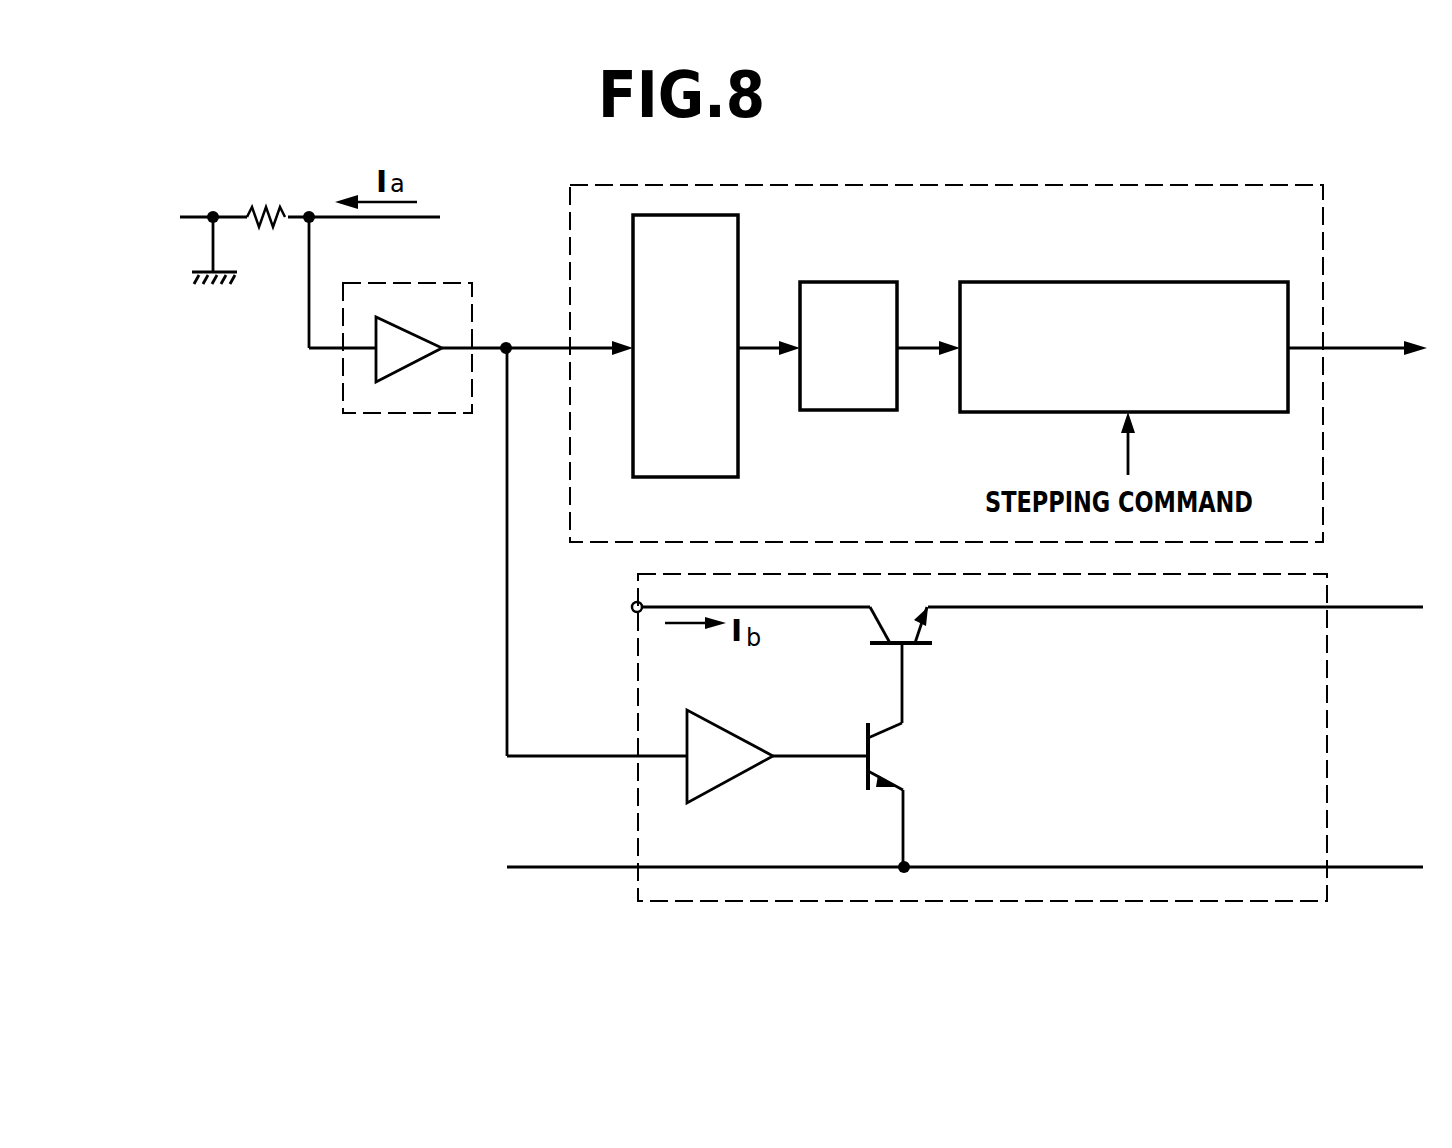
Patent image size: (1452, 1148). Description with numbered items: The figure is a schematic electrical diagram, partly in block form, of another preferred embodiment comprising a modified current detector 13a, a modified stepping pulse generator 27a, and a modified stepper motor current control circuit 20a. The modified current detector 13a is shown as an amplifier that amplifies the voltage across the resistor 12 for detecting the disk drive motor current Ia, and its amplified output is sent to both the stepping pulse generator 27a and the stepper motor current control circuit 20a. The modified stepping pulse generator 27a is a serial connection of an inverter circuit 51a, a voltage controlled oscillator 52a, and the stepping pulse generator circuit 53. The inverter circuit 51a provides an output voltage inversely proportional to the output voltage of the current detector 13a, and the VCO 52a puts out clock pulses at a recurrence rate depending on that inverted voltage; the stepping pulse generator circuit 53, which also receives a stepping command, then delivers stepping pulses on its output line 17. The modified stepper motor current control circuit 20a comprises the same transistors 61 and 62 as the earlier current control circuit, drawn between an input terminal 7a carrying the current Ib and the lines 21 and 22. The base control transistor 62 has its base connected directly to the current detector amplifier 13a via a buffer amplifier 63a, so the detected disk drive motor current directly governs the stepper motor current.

The resistor 12 is at (259, 206).
The modified current detector 13a is at (387, 282).
The modified stepping pulse generator 27a is at (1323, 268).
The inverter circuit 51a is at (738, 268).
The voltage controlled oscillator 52a is at (863, 282).
The stepping pulse generator circuit 53 is at (1103, 280).
The output line 17 is at (1370, 343).
The modified stepper motor current control circuit 20a is at (1332, 787).
The input terminal 7a is at (632, 607).
The power supply line 21 is at (1380, 605).
The ground line 22 is at (1382, 865).
The transistor 61 is at (917, 648).
The base control transistor 62 is at (892, 732).
The buffer amplifier 63a is at (737, 733).